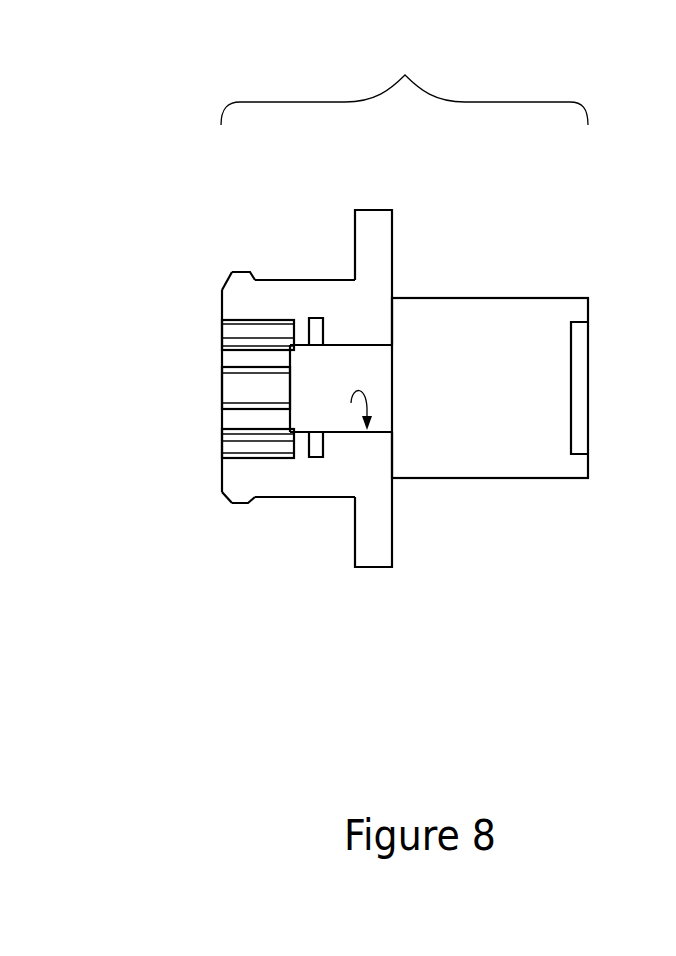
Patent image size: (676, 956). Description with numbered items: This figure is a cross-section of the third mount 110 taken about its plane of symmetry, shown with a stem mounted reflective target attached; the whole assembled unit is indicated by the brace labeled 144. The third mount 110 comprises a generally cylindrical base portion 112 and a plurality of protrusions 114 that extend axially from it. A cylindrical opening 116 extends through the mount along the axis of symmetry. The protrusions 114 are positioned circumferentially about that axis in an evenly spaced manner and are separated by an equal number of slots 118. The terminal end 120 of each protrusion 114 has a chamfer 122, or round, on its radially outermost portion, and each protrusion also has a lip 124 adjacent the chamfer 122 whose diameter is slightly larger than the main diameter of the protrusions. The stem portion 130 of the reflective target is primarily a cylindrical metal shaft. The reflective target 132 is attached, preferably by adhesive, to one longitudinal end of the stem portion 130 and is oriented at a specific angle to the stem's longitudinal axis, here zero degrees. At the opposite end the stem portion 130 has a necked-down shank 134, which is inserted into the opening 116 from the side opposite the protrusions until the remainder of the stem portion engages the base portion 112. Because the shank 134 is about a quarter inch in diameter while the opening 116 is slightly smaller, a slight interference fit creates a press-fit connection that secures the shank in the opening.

The connector assembly 144 is at (404, 82).
The third mount 110 is at (320, 268).
The base portion 112 is at (375, 237).
The protrusions 114 is at (233, 304).
The cylindrical opening 116 is at (351, 362).
The slots 118 is at (232, 357).
The terminal end 120 is at (216, 288).
The chamfer 122 is at (219, 287).
The lip 124 is at (236, 270).
The stem portion 130 is at (507, 316).
The reflective target 132 is at (582, 386).
The necked-down shank 134 is at (385, 383).